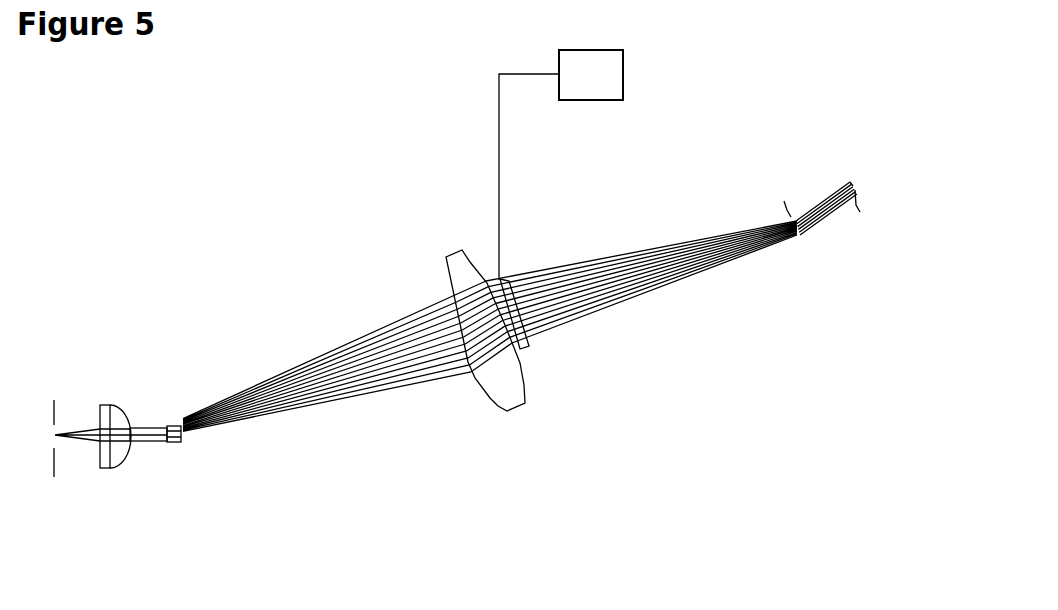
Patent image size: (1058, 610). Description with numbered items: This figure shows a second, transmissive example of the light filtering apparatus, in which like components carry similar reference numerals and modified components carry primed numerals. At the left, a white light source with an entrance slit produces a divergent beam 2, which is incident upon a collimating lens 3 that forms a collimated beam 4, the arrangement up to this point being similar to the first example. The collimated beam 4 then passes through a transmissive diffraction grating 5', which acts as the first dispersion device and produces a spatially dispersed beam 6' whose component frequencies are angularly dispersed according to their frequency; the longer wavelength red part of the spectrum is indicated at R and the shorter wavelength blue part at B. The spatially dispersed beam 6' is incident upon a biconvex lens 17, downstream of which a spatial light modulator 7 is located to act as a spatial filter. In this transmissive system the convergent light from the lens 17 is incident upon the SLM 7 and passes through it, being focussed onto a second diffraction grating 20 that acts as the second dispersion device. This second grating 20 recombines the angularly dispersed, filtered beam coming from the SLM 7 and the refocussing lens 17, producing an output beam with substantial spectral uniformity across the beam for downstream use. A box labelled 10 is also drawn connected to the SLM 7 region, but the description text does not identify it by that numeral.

The divergent beam 2 is at (65, 437).
The collimating lens 3 is at (112, 403).
The collimated beam 4 is at (143, 442).
The transmissive diffraction grating 5' is at (221, 476).
The spatially dispersed beam 6' is at (347, 405).
The red part of the white light spectrum R is at (387, 325).
The blue part of the white light spectrum B is at (378, 387).
The spatial light modulator 7 is at (551, 354).
The controller 10 is at (561, 165).
The biconvex lens 17 is at (510, 404).
The second diffraction grating 20 is at (786, 264).